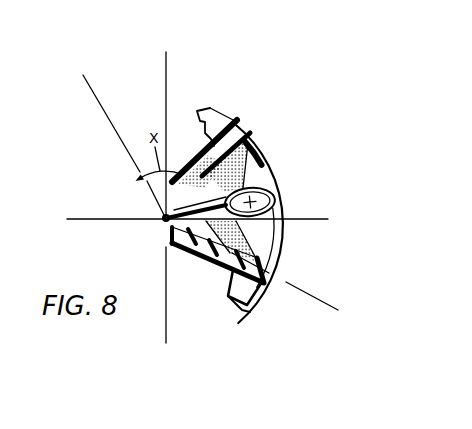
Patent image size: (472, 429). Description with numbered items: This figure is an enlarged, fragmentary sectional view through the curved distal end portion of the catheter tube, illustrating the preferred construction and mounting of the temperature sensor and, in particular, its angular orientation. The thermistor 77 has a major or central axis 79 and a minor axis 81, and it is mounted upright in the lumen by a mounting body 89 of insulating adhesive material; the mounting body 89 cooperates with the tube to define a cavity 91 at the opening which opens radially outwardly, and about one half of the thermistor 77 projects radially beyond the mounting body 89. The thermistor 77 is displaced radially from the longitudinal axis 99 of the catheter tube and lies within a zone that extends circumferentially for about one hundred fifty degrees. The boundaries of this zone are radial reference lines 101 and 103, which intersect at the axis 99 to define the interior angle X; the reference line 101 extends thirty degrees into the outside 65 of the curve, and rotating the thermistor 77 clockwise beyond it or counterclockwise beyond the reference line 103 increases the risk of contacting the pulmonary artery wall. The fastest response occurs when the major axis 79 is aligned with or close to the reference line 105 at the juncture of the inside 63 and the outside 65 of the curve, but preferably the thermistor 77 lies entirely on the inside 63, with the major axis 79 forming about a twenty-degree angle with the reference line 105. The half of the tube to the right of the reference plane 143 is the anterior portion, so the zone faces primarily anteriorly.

The reference plane 143 is at (164, 63).
The reference line 105 is at (314, 196).
The radial reference line 103 is at (98, 108).
The radial reference line 101 is at (306, 296).
The longitudinal axis 99 is at (163, 220).
The inside of the curve 63 is at (239, 127).
The minor axis 81 is at (273, 230).
The cavity 91 is at (262, 153).
The mounting body 89 is at (204, 147).
The thermistor 77 is at (265, 186).
The major axis 79 is at (262, 194).
The outside of the curve 65 is at (237, 320).